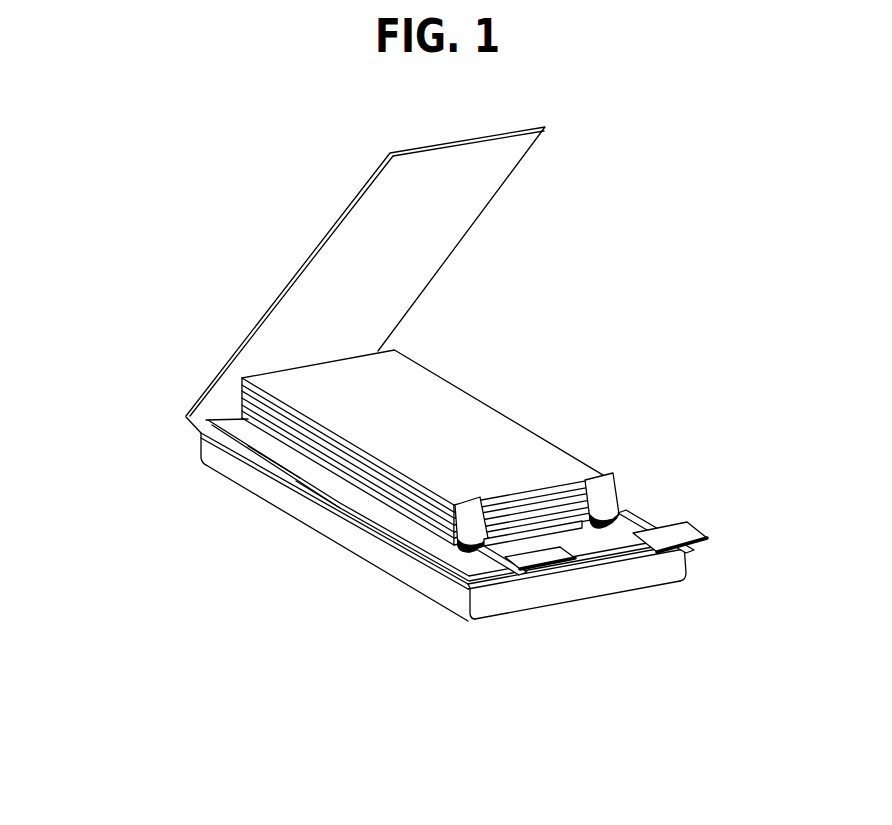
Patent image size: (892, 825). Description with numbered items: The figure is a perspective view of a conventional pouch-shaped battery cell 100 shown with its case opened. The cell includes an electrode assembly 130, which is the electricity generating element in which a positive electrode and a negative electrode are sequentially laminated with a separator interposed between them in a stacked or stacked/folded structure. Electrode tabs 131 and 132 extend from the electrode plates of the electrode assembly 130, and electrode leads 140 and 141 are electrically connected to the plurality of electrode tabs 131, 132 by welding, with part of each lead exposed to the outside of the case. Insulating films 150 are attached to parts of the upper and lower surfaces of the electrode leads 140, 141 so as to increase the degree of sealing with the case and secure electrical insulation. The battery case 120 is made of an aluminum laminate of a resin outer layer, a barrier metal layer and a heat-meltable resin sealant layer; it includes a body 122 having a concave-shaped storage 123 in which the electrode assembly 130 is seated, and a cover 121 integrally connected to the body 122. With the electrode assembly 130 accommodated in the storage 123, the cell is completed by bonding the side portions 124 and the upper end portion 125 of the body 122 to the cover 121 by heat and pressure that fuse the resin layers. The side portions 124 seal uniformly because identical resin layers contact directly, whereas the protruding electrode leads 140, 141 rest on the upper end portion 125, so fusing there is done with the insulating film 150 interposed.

The pouch-shaped battery cell 100 is at (175, 162).
The battery case 120 is at (185, 414).
The cover 121 is at (259, 320).
The body 122 is at (336, 543).
The storage 123 is at (254, 447).
The side portions 124 is at (297, 481).
The upper end portion 125 is at (640, 548).
The electrode assembly 130 is at (487, 380).
The electrode tab 131 is at (468, 549).
The electrode tab 132 is at (619, 493).
The electrode lead 140 is at (452, 575).
The electrode lead 141 is at (643, 513).
The insulating film 150 is at (497, 594).